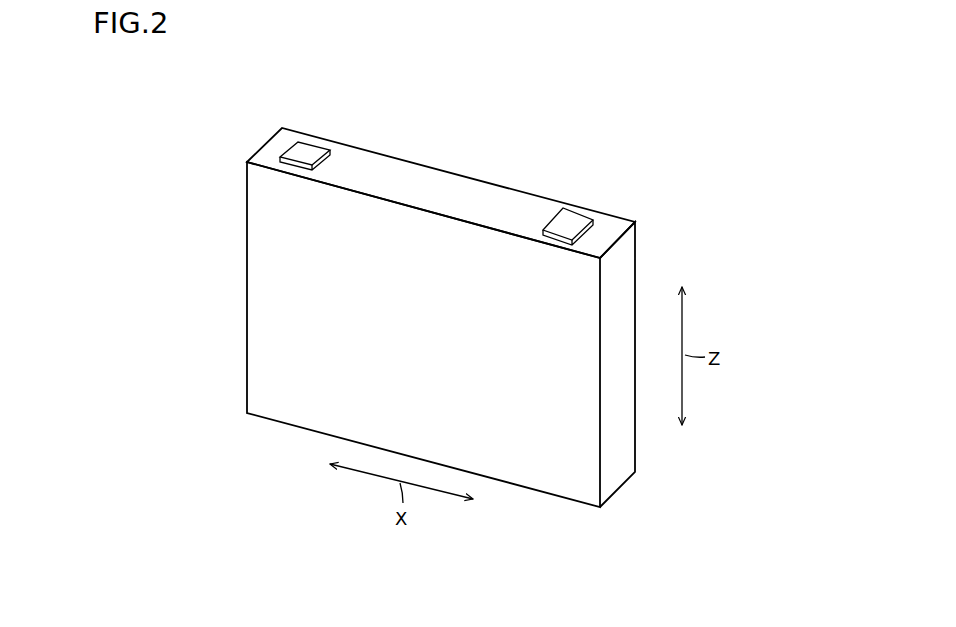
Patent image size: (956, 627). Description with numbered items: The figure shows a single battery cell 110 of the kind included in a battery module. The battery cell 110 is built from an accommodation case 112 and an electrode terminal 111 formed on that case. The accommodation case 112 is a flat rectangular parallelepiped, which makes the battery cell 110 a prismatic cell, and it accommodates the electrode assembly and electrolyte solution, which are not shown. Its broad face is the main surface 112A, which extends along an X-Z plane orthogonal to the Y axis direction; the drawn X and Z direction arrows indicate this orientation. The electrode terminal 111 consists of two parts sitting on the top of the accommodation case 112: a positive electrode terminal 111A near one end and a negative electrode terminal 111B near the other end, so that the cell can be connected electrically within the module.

The battery cell 110 is at (257, 108).
The electrode terminal 111 is at (588, 97).
The positive electrode terminal 111A is at (306, 152).
The negative electrode terminal 111B is at (570, 221).
The accommodation case 112 is at (617, 462).
The main surface 112A is at (290, 317).